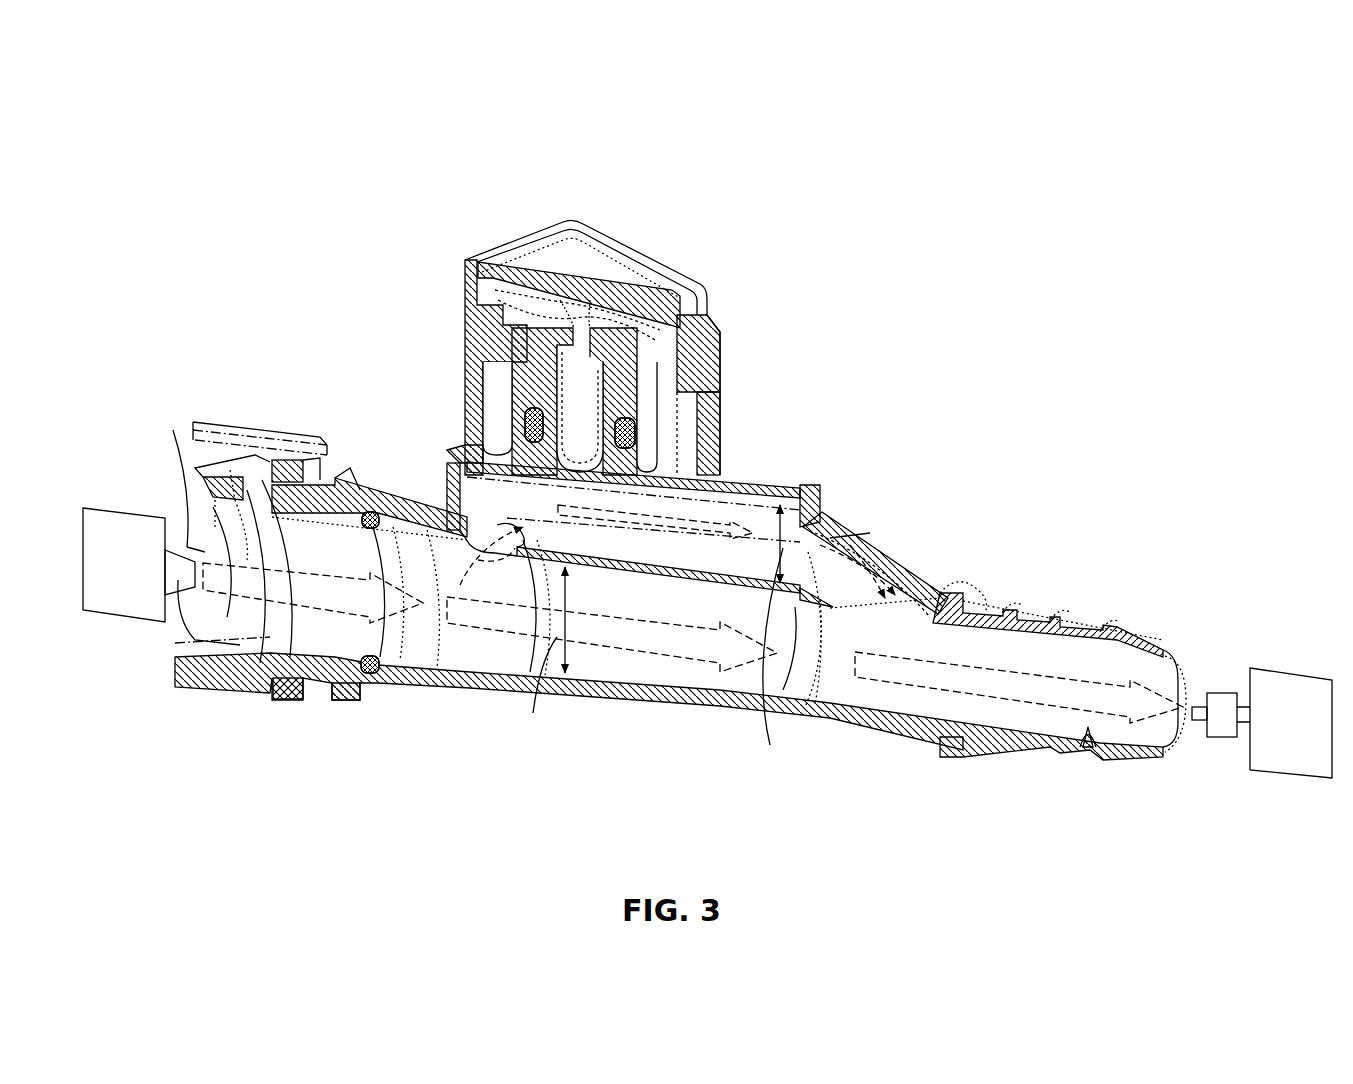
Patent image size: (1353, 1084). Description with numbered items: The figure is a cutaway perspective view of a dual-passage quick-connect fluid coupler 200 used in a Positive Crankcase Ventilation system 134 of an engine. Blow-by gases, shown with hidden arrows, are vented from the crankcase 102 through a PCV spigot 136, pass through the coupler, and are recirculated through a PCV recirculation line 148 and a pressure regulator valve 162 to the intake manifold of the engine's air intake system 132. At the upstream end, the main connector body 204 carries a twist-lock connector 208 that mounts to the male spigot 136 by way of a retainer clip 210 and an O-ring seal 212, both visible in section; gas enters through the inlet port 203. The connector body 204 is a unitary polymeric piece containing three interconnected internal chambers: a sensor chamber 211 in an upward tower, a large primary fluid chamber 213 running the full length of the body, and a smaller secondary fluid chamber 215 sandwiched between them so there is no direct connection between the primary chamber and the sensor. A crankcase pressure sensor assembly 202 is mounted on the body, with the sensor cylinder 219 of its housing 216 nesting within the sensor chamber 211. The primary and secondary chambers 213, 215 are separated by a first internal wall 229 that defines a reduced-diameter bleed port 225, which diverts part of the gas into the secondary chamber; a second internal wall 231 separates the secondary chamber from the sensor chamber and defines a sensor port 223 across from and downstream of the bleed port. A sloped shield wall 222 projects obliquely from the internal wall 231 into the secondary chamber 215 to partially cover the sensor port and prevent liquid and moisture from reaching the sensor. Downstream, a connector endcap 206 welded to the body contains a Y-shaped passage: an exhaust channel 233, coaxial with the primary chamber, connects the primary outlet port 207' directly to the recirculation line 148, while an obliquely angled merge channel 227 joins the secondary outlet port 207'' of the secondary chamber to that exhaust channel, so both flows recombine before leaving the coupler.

The crankcase 102 is at (87, 507).
The air intake system 132 is at (1303, 673).
The Positive Crankcase Ventilation (PCV) system 134 is at (268, 210).
The PCV spigot 136 is at (160, 450).
The PCV recirculation line 148 is at (1185, 708).
The pressure regulator valve 162 is at (1230, 693).
The quick-connect (QC) fluid coupler 200 is at (958, 364).
The crankcase pressure sensor (CcPS) assembly 202 is at (541, 307).
The inlet port 203 is at (210, 447).
The main connector body 204 is at (600, 700).
The connector endcap 206 is at (933, 753).
The primary outlet port 207' is at (792, 691).
The secondary outlet port 207'' is at (876, 504).
The twist-lock connector 208 is at (253, 420).
The retainer clip 210 is at (315, 700).
The sensor chamber 211 is at (465, 332).
The O-ring seal 212 is at (376, 675).
The primary fluid chamber 213 is at (495, 665).
The secondary fluid chamber 215 is at (452, 445).
The housing 216 is at (465, 290).
The sensor cylinder 219 is at (540, 395).
The sloped shield wall 222 is at (550, 455).
The sensor port 223 is at (703, 507).
The bleed port 225 is at (470, 470).
The merge channel 227 is at (923, 600).
The internal wall 229 is at (780, 693).
The internal wall 231 is at (538, 410).
The exhaust channel 233 is at (1090, 732).